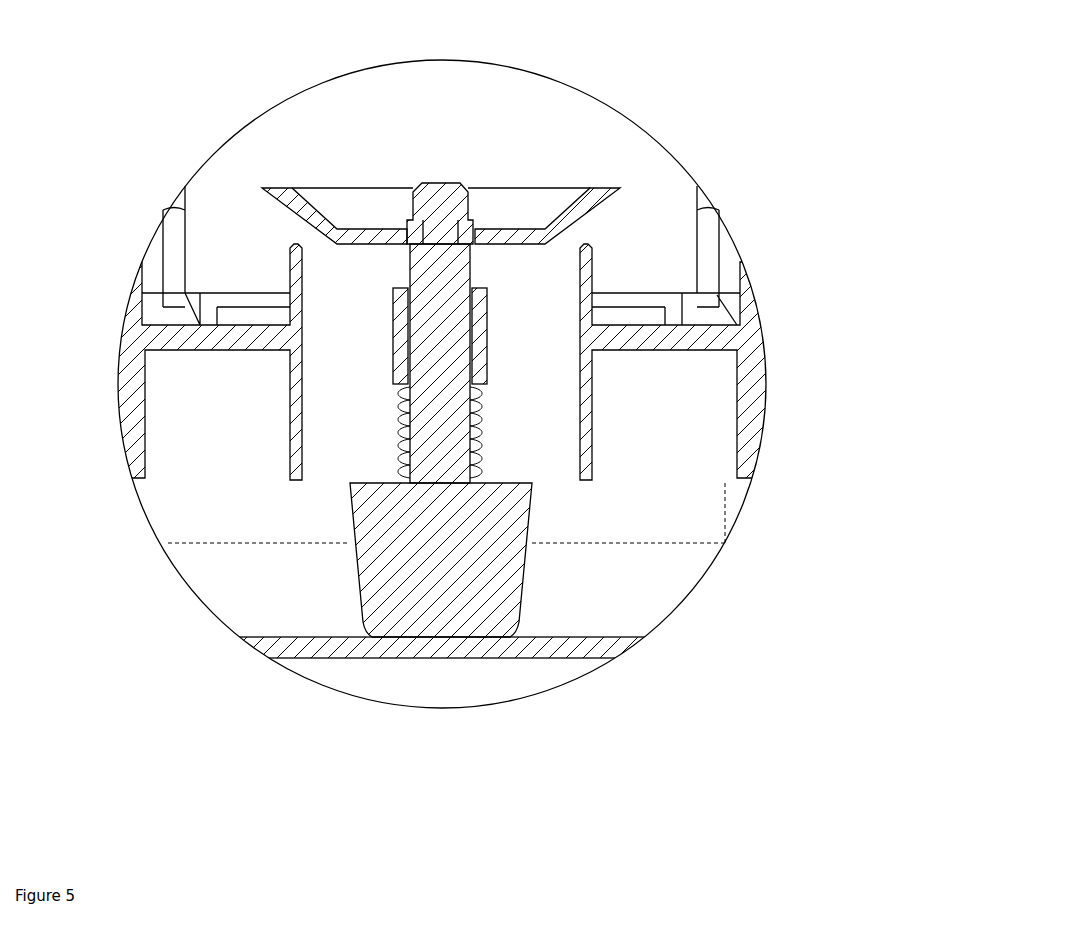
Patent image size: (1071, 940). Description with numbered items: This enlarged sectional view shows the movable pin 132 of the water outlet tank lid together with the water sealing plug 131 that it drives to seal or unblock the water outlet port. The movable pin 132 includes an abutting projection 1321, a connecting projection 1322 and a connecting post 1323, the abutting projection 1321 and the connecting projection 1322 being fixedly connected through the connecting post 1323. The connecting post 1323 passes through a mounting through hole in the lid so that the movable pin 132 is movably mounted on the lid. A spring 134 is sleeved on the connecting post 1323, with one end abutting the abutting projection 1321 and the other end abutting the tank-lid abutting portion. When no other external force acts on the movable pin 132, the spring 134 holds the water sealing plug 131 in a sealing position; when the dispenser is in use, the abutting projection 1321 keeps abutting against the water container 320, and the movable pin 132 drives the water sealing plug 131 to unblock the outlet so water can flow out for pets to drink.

The water sealing plug 131 is at (573, 210).
The movable pin 132 is at (643, 441).
The abutting projection 1321 is at (433, 542).
The connecting projection 1322 is at (733, 600).
The connecting post 1323 is at (738, 642).
The spring 134 is at (185, 790).
The water container 320 is at (687, 832).